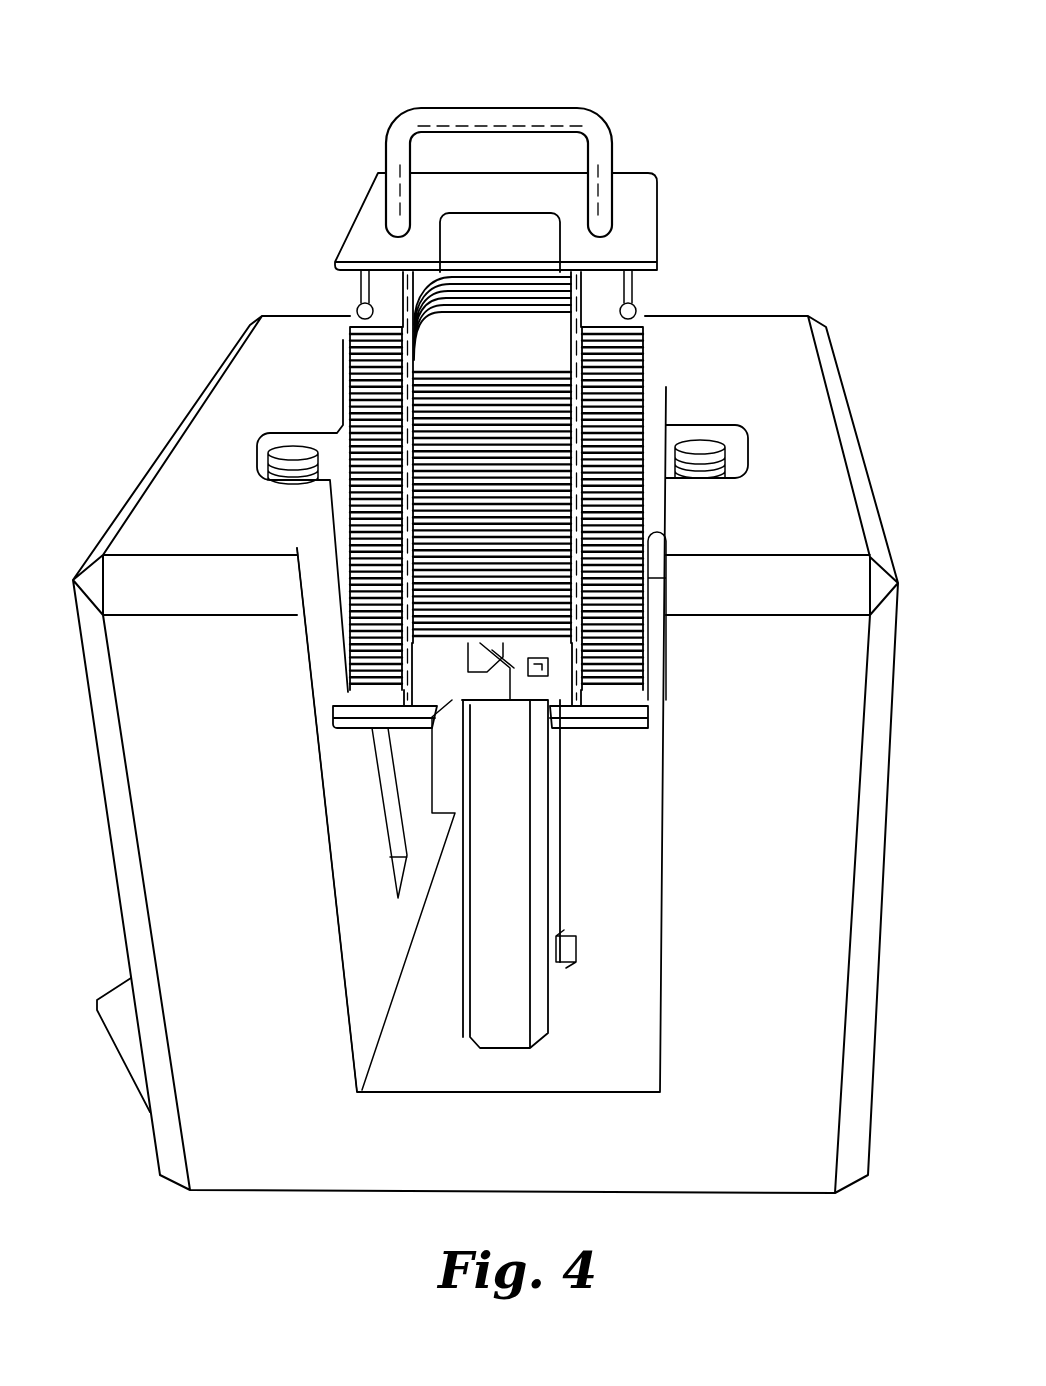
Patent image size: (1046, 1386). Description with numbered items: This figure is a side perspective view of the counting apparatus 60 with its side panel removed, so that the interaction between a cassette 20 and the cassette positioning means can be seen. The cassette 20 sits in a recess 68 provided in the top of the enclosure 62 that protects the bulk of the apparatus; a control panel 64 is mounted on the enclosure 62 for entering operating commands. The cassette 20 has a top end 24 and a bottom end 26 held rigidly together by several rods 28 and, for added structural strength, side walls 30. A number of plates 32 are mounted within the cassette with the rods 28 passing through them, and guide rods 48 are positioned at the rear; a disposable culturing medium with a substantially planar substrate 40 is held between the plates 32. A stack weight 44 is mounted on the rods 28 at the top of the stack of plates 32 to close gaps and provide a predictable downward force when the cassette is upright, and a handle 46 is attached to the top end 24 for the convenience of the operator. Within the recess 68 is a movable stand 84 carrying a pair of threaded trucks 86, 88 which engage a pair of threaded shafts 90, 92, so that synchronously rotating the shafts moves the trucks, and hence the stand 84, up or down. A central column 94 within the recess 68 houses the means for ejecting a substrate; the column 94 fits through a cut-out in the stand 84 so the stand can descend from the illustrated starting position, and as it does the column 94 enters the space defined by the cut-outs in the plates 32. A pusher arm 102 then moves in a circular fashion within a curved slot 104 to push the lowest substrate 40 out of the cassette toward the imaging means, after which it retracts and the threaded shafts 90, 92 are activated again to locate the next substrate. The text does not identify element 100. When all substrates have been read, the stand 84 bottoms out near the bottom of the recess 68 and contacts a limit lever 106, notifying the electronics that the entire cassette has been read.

The cassette 20 is at (410, 106).
The top end 24 is at (643, 188).
The bottom end 26 is at (333, 706).
The rods 28 is at (356, 298).
The side walls 30 is at (362, 284).
The plates 32 is at (350, 362).
The substrate 40 is at (523, 365).
The stack weight 44 is at (523, 263).
The handle 46 is at (485, 118).
The guide rod 48 is at (590, 312).
The counting apparatus 60 is at (628, 58).
The enclosure 62 is at (815, 420).
The control panel 64 is at (118, 982).
The recess 68 is at (658, 895).
The movable stand 84 is at (365, 736).
The threaded truck 86 is at (657, 655).
The threaded truck 88 is at (336, 553).
The threaded shaft 90 is at (706, 440).
The threaded shaft 92 is at (292, 445).
The central column 94 is at (505, 1035).
The connector 100 is at (552, 660).
The pusher arm 102 is at (478, 676).
The curved slot 104 is at (495, 650).
The limit lever 106 is at (578, 950).